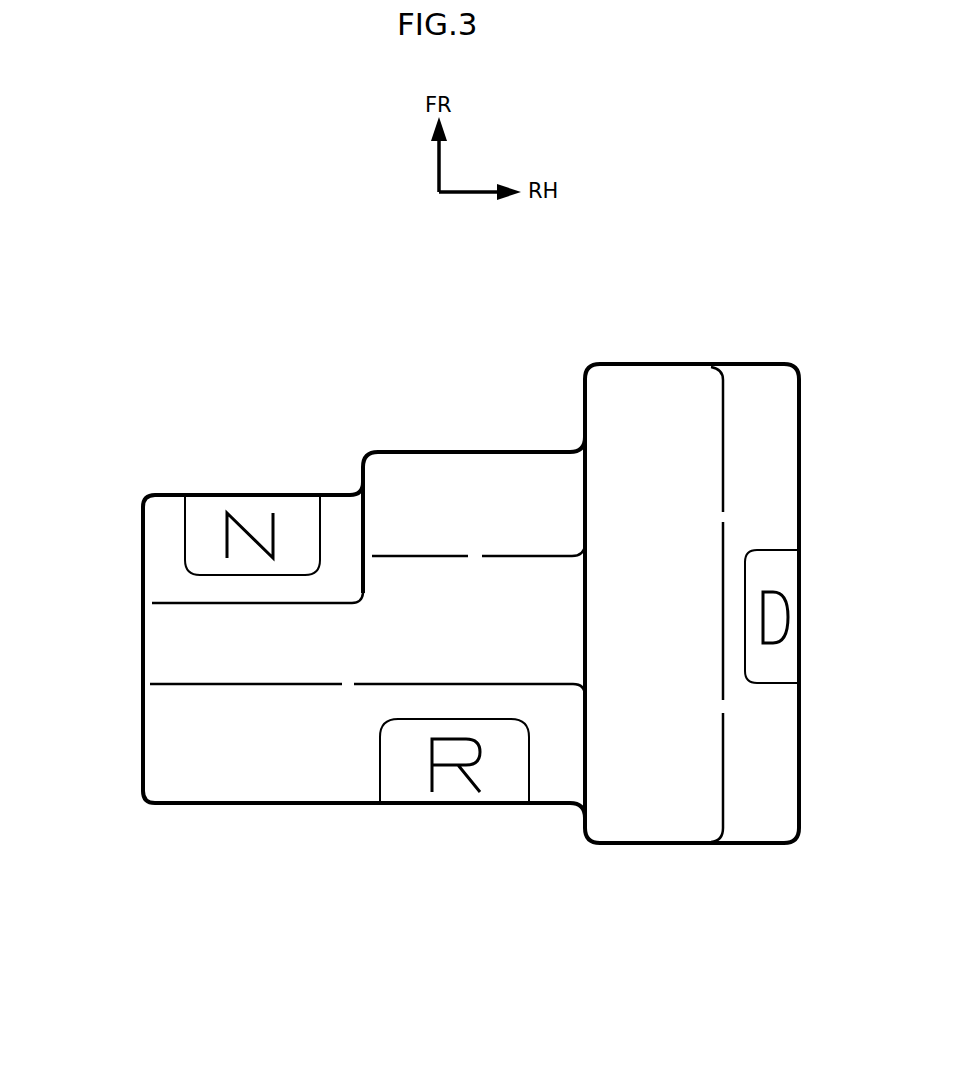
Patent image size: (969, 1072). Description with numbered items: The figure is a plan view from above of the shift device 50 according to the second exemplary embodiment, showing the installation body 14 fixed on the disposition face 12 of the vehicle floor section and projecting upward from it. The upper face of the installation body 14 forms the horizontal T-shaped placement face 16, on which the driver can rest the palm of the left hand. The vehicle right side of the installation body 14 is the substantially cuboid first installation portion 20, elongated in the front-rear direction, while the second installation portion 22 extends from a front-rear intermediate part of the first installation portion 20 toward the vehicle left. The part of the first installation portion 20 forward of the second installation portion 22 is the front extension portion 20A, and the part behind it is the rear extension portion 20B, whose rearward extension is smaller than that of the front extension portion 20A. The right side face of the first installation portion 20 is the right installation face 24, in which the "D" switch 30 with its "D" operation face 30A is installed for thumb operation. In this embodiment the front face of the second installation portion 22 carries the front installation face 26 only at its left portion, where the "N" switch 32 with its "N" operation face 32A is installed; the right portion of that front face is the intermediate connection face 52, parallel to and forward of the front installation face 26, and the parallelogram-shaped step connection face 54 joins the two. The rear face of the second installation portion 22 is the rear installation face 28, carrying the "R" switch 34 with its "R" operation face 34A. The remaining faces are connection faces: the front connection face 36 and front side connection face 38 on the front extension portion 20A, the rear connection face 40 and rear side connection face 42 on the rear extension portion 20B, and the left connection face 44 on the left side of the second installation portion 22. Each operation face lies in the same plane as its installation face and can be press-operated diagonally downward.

The disposition face 12 is at (413, 383).
The installation body 14 is at (138, 741).
The placement face 16 is at (650, 375).
The first installation portion 20 is at (752, 362).
The front extension portion 20A is at (613, 362).
The rear extension portion 20B is at (655, 845).
The second installation portion 22 is at (143, 650).
The right installation face 24 is at (782, 448).
The front installation face 26 is at (165, 510).
The rear installation face 28 is at (250, 785).
The "D" switch 30 is at (772, 550).
The "D" operation face 30A is at (787, 575).
The "N" switch 32 is at (328, 510).
The "N" operation face 32A is at (206, 508).
The "R" switch 34 is at (380, 762).
The "R" operation face 34A is at (500, 790).
The front connection face 36 is at (688, 362).
The front side connection face 38 is at (585, 403).
The rear connection face 40 is at (752, 845).
The rear side connection face 42 is at (583, 768).
The left connection face 44 is at (143, 578).
The shift device 50 is at (228, 357).
The intermediate connection face 52 is at (478, 475).
The step connection face 54 is at (360, 515).